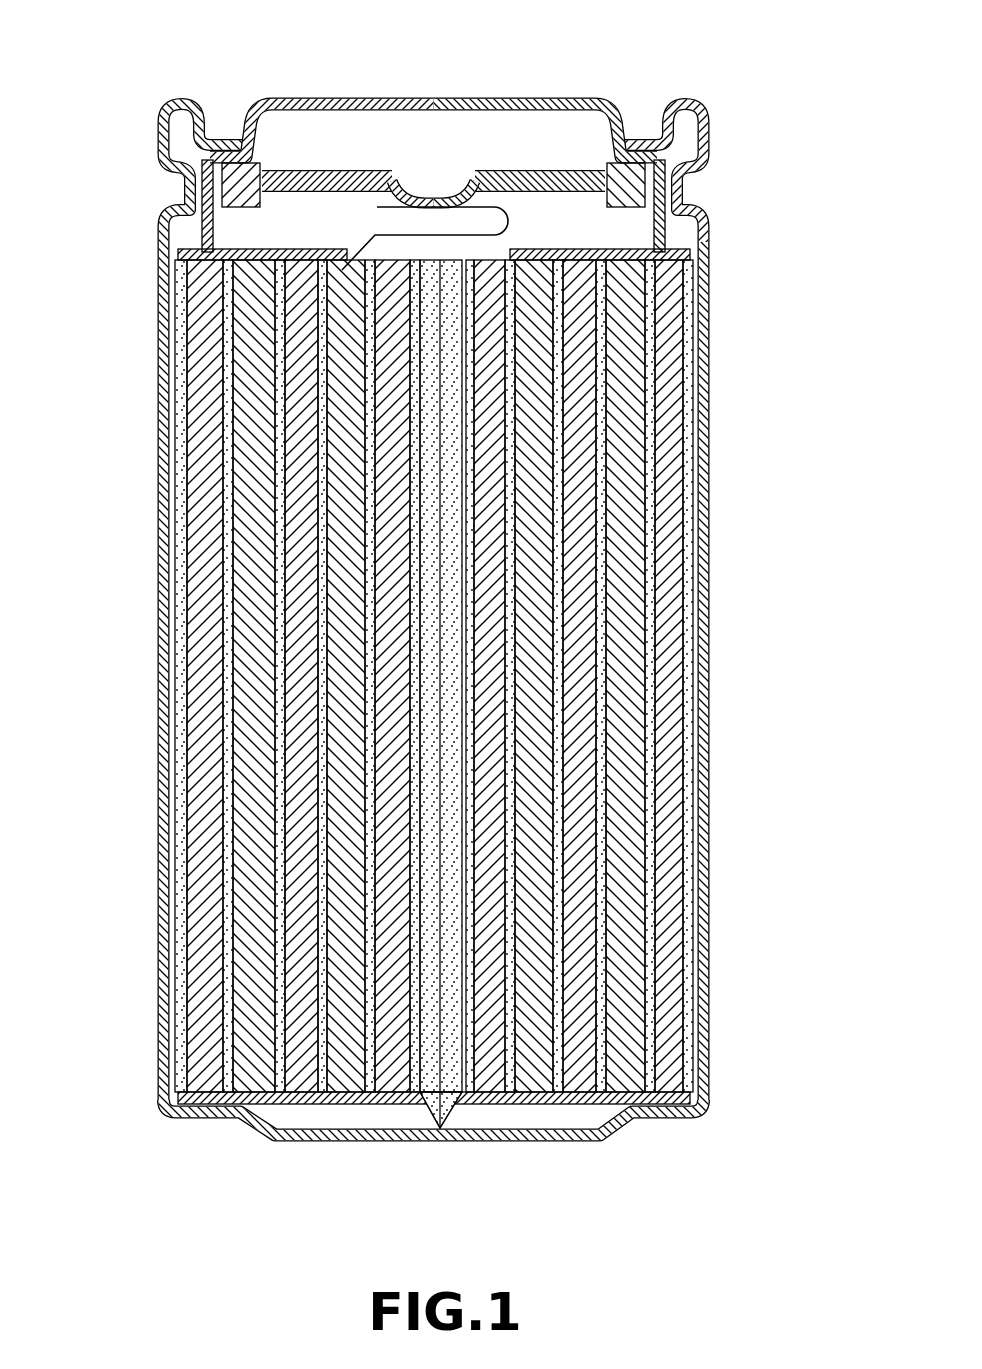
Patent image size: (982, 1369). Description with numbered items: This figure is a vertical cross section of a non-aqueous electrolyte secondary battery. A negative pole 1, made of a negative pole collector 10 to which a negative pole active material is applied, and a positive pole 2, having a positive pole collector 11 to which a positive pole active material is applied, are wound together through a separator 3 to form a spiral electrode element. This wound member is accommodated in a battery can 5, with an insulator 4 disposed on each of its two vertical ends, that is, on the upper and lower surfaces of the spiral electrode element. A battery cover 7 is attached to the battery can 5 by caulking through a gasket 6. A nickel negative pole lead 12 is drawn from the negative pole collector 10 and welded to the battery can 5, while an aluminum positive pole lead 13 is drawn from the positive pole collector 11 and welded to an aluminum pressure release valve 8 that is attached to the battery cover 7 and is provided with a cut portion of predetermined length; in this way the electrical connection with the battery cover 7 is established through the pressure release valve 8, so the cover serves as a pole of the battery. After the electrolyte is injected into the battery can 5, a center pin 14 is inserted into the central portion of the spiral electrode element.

The negative pole 1 is at (672, 386).
The positive pole 2 is at (626, 590).
The separator 3 is at (648, 806).
The insulator 4 is at (662, 1118).
The battery can 5 is at (160, 448).
The gasket 6 is at (162, 108).
The battery cover 7 is at (431, 97).
The pressure release valve 8 is at (489, 168).
The negative pole collector 10 is at (205, 656).
The positive pole collector 11 is at (256, 862).
The negative pole lead 12 is at (275, 1138).
The positive pole lead 13 is at (512, 220).
The center pin 14 is at (485, 1100).